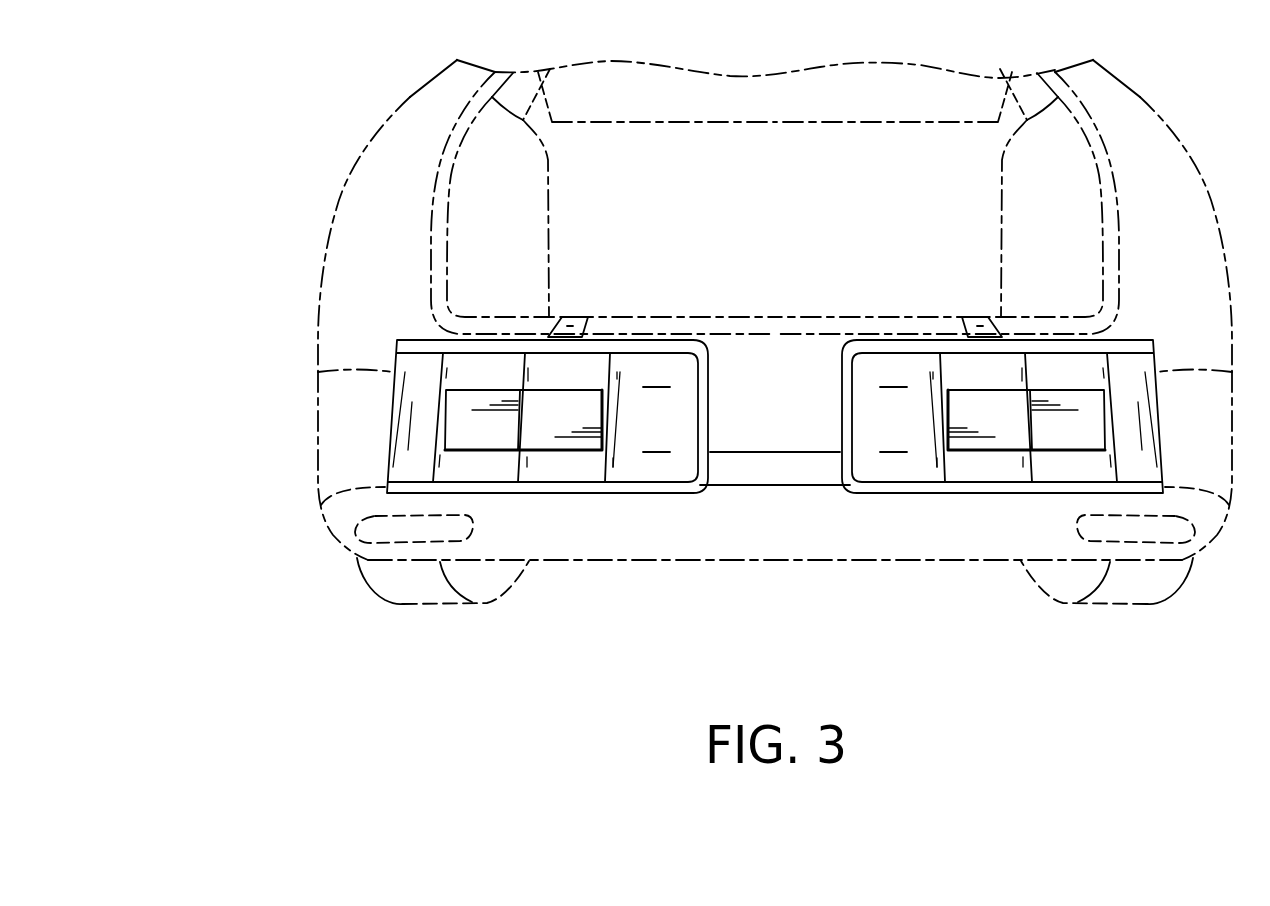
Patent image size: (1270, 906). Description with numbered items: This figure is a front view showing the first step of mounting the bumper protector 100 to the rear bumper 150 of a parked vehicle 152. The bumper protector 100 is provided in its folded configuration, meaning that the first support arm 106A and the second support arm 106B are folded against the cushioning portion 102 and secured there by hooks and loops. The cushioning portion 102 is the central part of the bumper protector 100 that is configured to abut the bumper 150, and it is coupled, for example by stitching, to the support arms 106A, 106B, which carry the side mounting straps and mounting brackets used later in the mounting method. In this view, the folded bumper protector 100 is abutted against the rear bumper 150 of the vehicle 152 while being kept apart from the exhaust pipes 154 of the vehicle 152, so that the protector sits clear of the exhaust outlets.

The bumper protector 100 is at (700, 371).
The cushioning portion 102 is at (823, 485).
The first support arm 106A is at (563, 487).
The second support arm 106B is at (960, 487).
The bumper 150 is at (316, 436).
The vehicle 152 is at (330, 232).
The exhaust pipes 154 is at (423, 545).